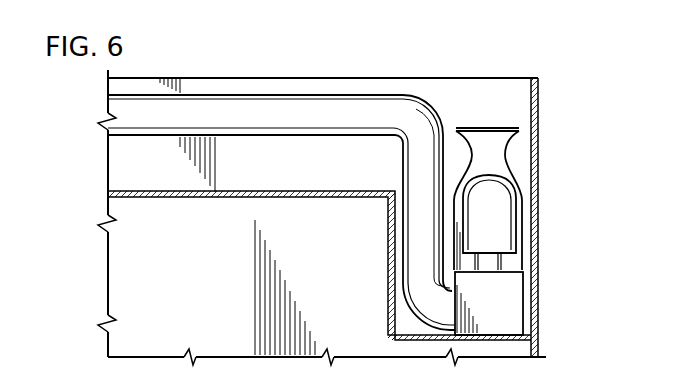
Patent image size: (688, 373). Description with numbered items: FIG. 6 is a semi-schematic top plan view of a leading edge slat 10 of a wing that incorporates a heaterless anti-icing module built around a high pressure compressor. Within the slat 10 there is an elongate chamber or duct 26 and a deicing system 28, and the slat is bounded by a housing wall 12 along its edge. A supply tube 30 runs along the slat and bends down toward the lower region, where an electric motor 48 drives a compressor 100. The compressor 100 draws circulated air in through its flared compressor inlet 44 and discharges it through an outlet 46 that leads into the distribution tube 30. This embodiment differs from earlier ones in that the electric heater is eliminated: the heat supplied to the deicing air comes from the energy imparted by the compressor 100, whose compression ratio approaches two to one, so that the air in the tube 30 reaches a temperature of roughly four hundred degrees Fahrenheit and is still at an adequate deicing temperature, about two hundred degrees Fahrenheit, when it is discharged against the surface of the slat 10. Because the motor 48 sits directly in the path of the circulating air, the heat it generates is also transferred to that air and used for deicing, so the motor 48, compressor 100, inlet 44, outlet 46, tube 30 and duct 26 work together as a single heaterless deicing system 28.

The leading edge slat 10 is at (404, 63).
The housing side wall 12 is at (442, 78).
The elongate chamber or duct 26 is at (262, 78).
The deicing system 28 is at (495, 118).
The supply tube 30 is at (318, 97).
The compressor inlet 44 is at (505, 128).
The outlet 46 is at (441, 311).
The electric motor 48 is at (498, 216).
The compressor 100 is at (513, 302).